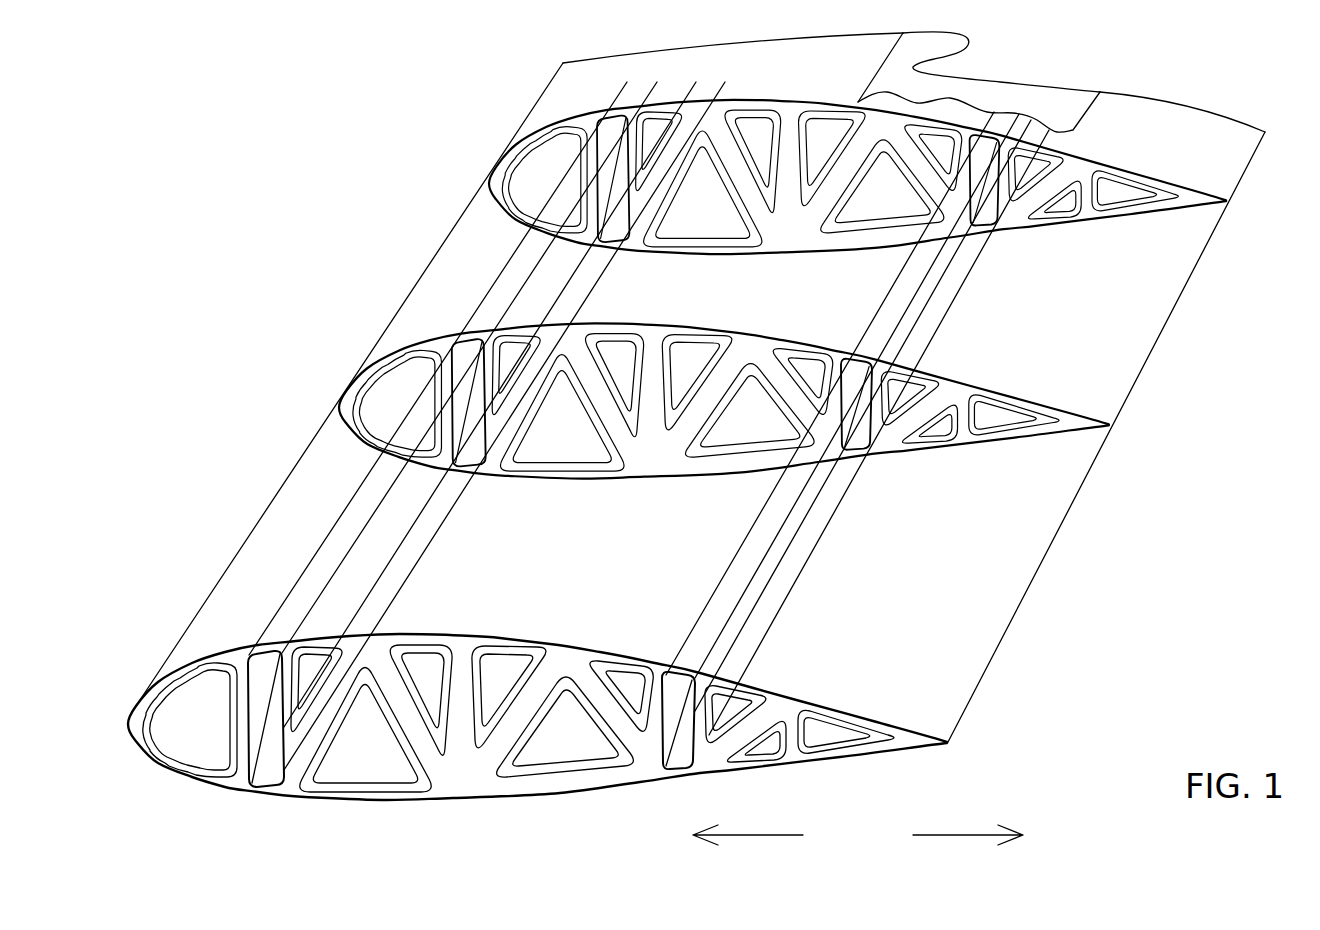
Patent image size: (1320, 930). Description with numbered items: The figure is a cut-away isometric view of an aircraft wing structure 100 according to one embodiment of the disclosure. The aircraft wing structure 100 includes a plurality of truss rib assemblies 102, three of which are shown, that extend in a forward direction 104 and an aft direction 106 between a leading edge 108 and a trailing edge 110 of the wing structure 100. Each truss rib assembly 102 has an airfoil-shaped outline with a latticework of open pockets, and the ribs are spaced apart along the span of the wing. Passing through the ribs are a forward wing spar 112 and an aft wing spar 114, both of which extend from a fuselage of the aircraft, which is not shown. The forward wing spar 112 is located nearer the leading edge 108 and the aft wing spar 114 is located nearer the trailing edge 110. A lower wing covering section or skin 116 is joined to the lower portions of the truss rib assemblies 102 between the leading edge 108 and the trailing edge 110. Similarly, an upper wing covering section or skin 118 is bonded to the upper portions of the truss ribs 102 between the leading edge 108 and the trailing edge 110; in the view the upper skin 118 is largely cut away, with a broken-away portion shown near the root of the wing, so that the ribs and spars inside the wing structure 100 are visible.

The aircraft wing structure 100 is at (404, 158).
The truss rib assembly 102 is at (806, 255).
The forward direction 104 is at (748, 837).
The aft direction 106 is at (970, 837).
The leading edge 108 is at (272, 506).
The trailing edge 110 is at (1035, 578).
The forward wing spar 112 is at (431, 542).
The aft wing spar 114 is at (805, 567).
The lower wing covering section or skin 116 is at (616, 590).
The upper wing covering section or skin 118 is at (1031, 69).